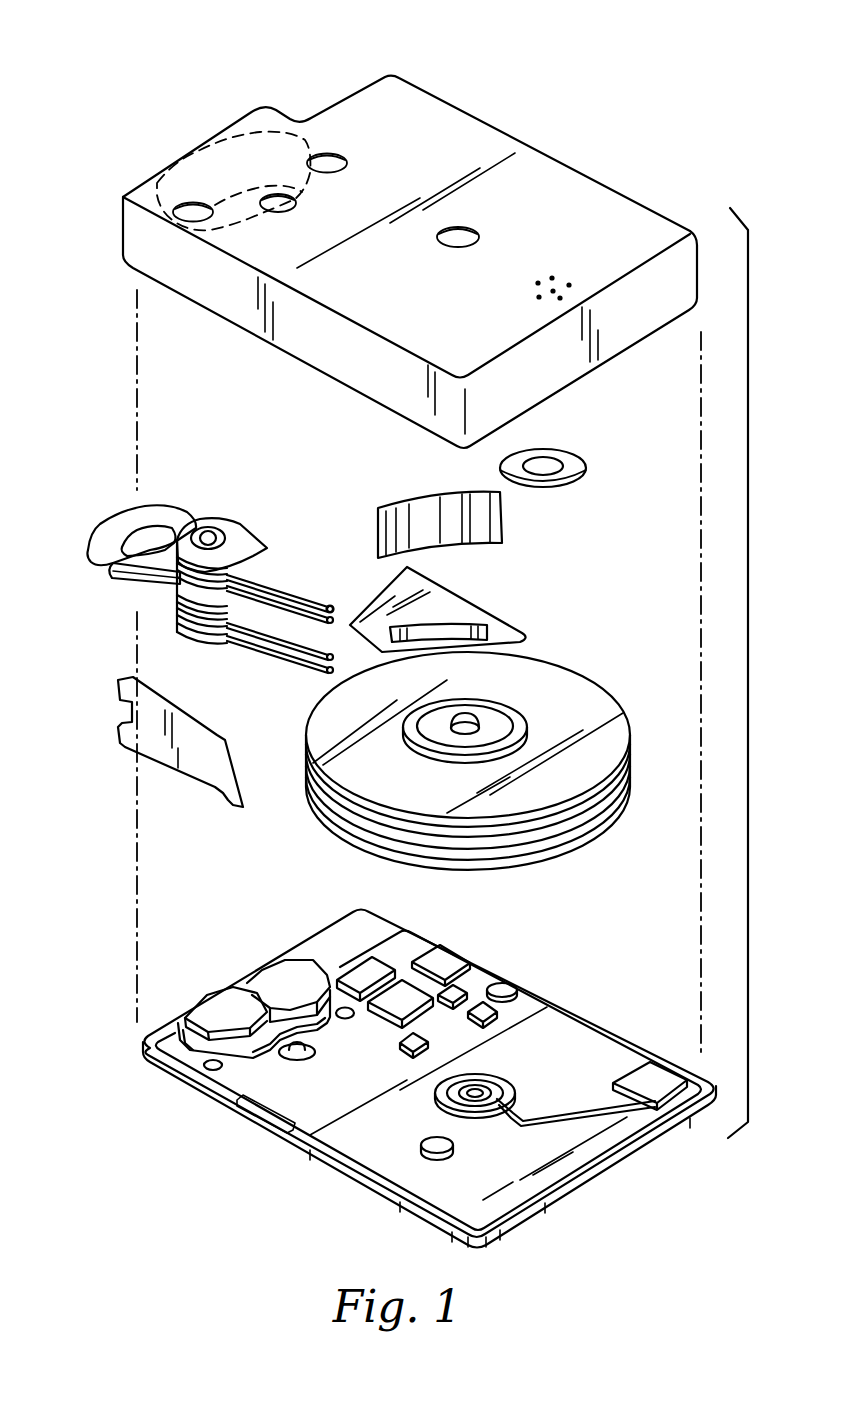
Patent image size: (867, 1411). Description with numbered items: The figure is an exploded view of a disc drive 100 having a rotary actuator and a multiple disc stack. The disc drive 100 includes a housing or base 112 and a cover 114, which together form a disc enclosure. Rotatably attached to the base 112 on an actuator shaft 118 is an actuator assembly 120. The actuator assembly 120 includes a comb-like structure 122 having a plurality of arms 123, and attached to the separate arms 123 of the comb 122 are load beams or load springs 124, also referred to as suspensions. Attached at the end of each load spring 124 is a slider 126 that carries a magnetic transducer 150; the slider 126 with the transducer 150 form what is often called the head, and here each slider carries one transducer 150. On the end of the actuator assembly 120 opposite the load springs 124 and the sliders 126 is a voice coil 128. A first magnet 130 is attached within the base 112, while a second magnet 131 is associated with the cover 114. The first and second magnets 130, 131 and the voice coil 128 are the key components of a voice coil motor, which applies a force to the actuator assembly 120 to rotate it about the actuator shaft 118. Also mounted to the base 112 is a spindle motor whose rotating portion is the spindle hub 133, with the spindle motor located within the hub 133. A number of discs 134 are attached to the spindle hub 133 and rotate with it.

The disc drive 100 is at (553, 50).
The base 112 is at (600, 1047).
The cover 114 is at (578, 198).
The actuator shaft 118 is at (213, 535).
The actuator assembly 120 is at (160, 588).
The comb-like structure 122 is at (240, 648).
The arms 123 is at (273, 550).
The load springs 124 is at (280, 573).
The slider 126 is at (328, 604).
The voice coil 128 is at (113, 537).
The first magnet 130 is at (205, 1010).
The second magnet 131 is at (233, 138).
The spindle hub 133 is at (480, 717).
The discs 134 is at (593, 700).
The magnetic transducer 150 is at (330, 612).